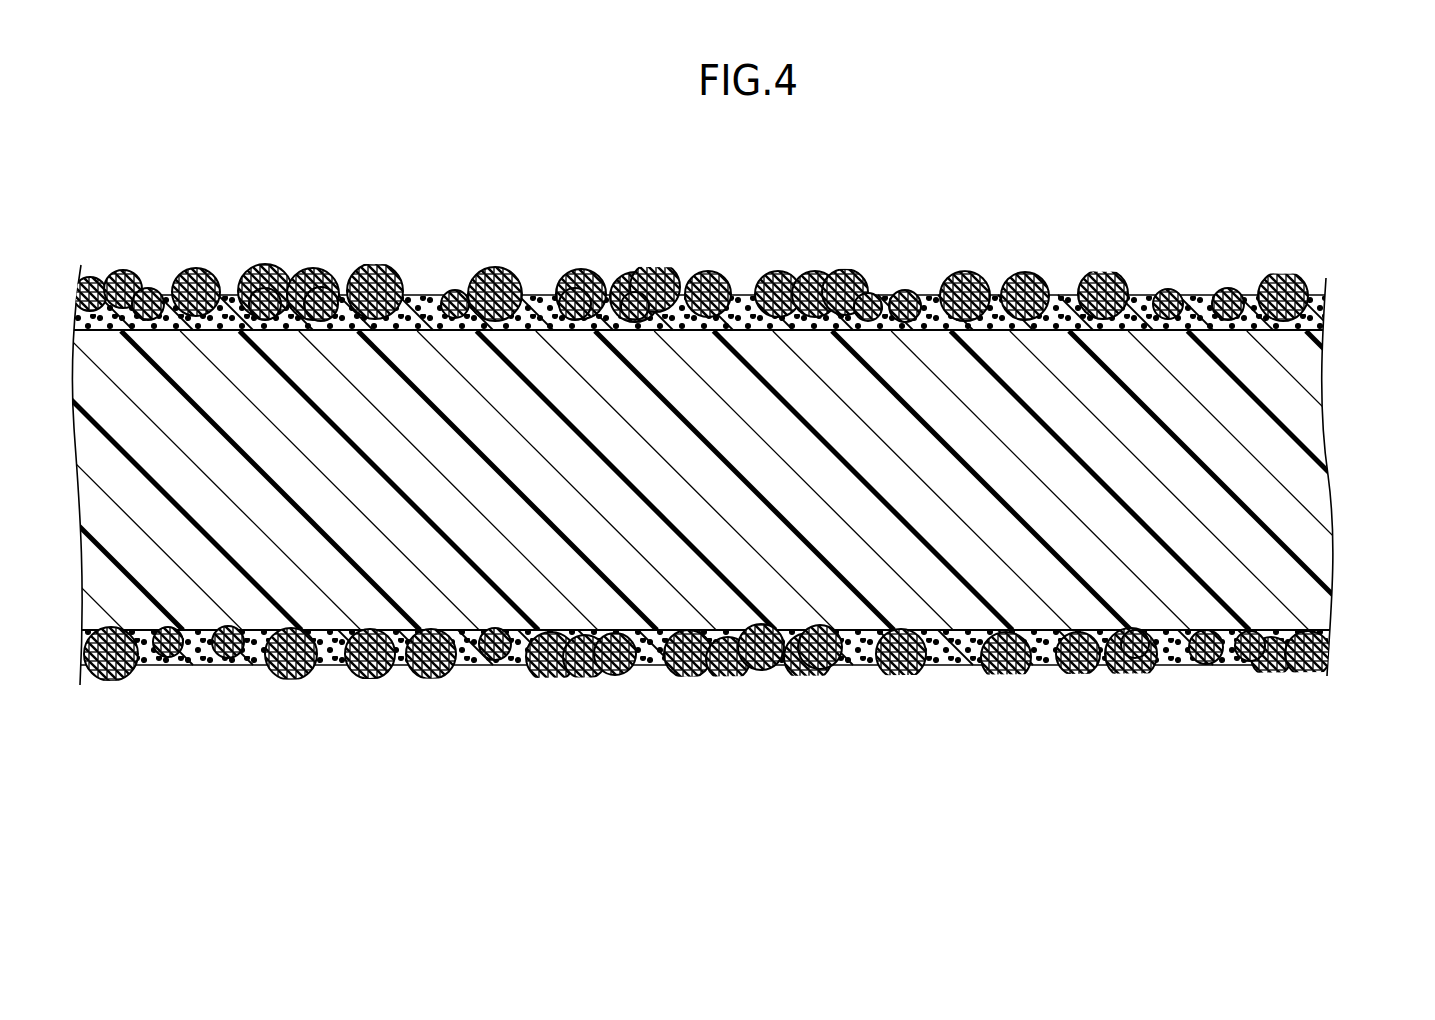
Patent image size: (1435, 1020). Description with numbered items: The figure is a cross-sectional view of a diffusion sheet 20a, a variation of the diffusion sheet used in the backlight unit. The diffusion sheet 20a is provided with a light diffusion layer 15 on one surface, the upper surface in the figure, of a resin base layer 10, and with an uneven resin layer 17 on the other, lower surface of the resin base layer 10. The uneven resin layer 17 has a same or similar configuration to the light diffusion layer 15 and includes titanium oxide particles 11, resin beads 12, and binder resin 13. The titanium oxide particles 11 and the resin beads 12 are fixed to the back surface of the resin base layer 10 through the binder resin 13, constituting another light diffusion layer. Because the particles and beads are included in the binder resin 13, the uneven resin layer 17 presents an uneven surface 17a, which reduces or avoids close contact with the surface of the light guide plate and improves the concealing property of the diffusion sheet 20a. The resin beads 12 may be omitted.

The diffusion sheet 20a is at (136, 198).
The resin base layer 10 is at (1308, 482).
The titanium oxide particles 11 is at (1140, 288).
The resin beads 12 is at (1112, 274).
The binder resin 13 is at (1203, 288).
The light diffusion layer 15 is at (1082, 183).
The uneven resin layer 17 is at (1212, 760).
The uneven surface 17a is at (886, 676).